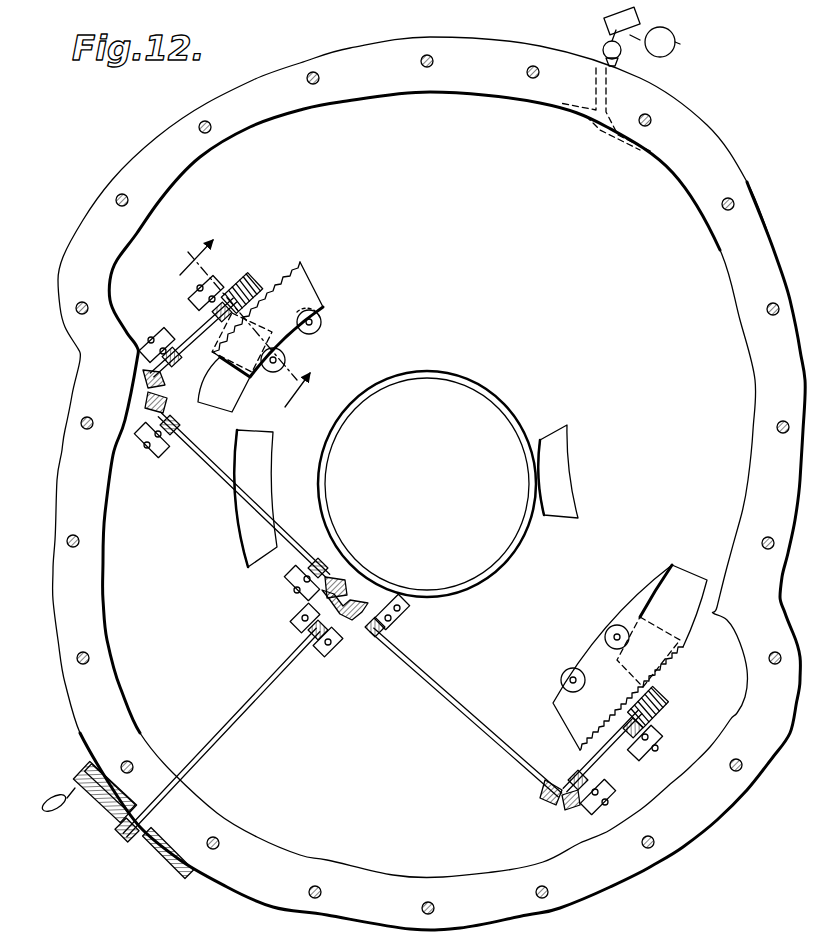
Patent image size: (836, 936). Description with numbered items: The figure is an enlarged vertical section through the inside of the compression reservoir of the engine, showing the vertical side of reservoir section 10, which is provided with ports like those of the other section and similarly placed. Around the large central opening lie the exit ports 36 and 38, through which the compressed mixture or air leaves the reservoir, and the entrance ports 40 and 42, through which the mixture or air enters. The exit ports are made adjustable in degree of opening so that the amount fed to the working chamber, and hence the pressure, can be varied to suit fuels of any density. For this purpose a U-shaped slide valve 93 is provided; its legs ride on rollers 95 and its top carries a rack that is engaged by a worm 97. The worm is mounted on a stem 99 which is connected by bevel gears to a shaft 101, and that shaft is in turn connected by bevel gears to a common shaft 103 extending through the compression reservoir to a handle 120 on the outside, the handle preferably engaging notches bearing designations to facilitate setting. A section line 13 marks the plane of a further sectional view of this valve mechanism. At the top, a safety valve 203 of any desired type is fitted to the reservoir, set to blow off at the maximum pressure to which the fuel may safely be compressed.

The section of compression reservoir 10 is at (640, 183).
The section line 13— 13 is at (251, 315).
The exit port 36 is at (672, 598).
The exit port 38 is at (232, 388).
The entrance port 40 is at (566, 450).
The entrance port 42 is at (258, 465).
The slide valve 93 is at (295, 278).
The rollers 95 is at (285, 360).
The worm 97 is at (237, 280).
The stem 99 is at (188, 350).
The shaft 101 is at (220, 470).
The common shaft 103 is at (227, 727).
The handle 120 is at (107, 822).
The safety valve 203 is at (604, 50).